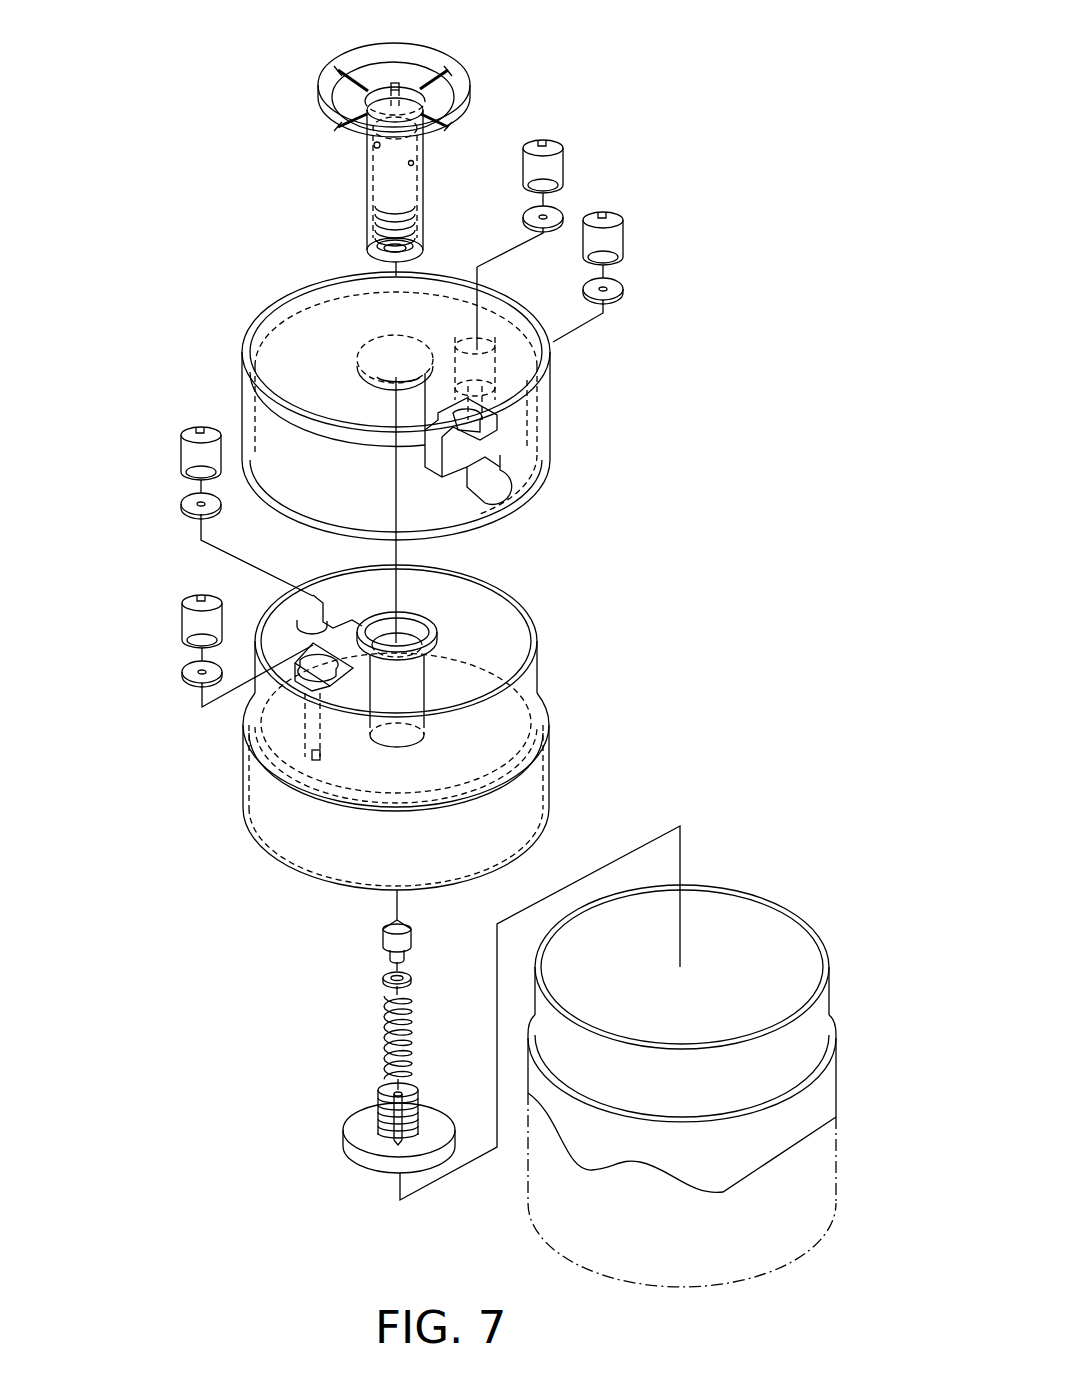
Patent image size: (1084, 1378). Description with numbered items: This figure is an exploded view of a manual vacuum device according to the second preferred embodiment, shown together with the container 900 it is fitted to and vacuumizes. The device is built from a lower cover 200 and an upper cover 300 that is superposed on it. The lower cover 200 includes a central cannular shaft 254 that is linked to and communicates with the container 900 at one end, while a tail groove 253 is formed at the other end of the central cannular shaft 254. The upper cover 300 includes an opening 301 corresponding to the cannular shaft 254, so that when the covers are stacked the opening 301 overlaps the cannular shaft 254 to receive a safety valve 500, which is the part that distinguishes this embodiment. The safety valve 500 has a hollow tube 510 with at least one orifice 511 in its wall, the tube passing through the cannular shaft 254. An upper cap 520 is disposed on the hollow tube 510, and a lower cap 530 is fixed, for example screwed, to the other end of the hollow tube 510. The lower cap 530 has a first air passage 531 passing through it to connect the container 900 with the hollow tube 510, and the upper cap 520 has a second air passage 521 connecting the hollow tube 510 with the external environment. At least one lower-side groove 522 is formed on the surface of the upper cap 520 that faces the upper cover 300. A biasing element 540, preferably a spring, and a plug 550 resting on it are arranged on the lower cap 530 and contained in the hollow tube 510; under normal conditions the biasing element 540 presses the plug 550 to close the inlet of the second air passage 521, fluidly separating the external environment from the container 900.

The lower cover 200 is at (228, 772).
The tail groove 253 is at (406, 632).
The central cannular shaft 254 is at (437, 673).
The upper cover 300 is at (218, 366).
The opening 301 is at (377, 353).
The safety valve 500 is at (258, 99).
The hollow tube 510 is at (368, 200).
The orifice 511 is at (374, 144).
The upper cap 520 is at (430, 45).
The second air passage 521 is at (336, 124).
The lower-side groove 522 is at (463, 72).
The lower cap 530 is at (350, 1153).
The first air passage 531 is at (380, 1125).
The biasing element 540 is at (383, 1037).
The plug 550 is at (383, 940).
The container 900 is at (805, 903).